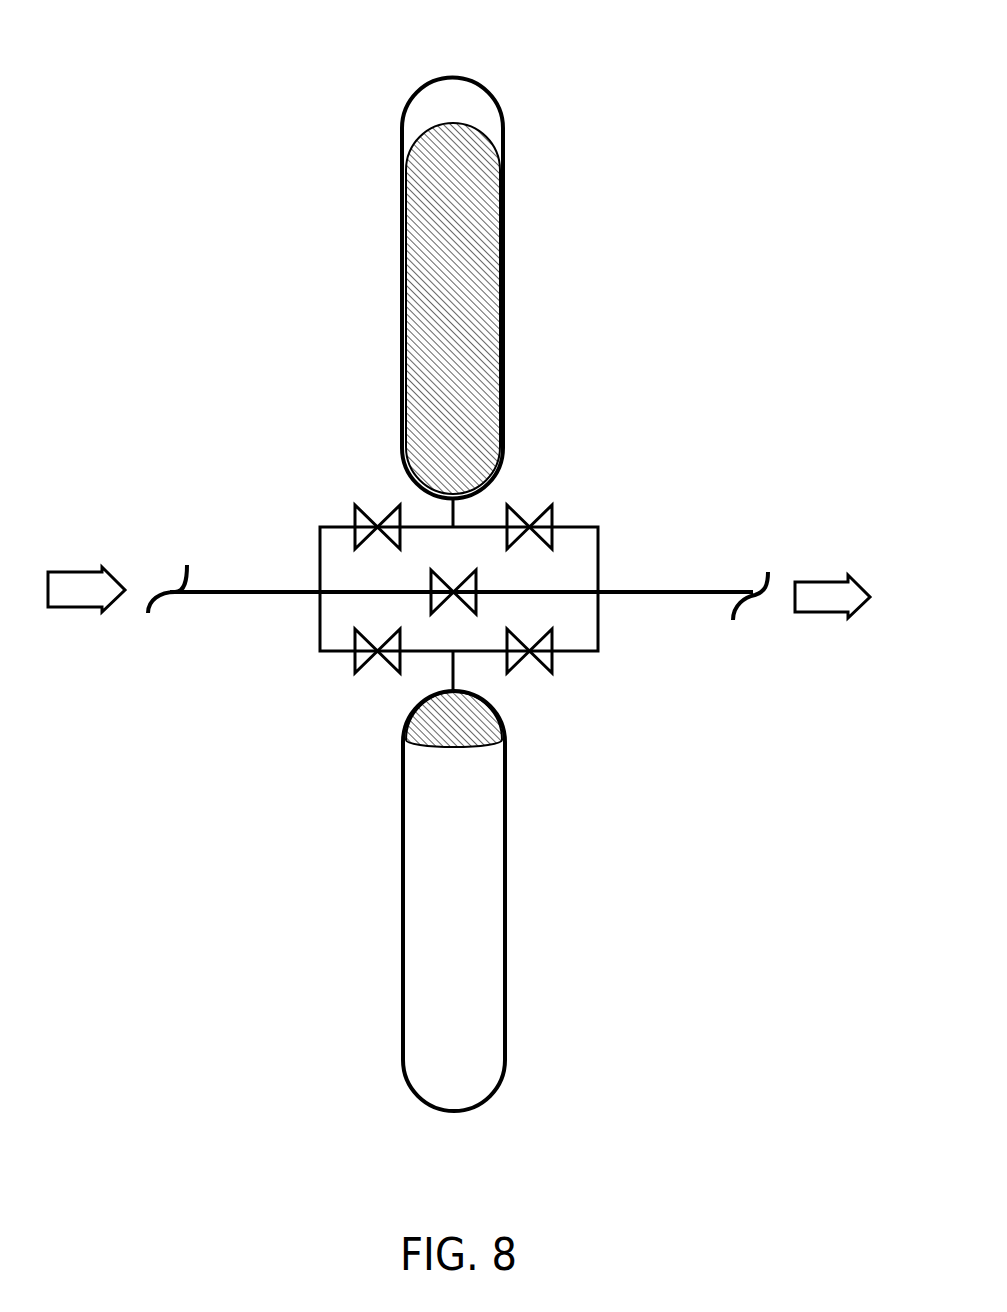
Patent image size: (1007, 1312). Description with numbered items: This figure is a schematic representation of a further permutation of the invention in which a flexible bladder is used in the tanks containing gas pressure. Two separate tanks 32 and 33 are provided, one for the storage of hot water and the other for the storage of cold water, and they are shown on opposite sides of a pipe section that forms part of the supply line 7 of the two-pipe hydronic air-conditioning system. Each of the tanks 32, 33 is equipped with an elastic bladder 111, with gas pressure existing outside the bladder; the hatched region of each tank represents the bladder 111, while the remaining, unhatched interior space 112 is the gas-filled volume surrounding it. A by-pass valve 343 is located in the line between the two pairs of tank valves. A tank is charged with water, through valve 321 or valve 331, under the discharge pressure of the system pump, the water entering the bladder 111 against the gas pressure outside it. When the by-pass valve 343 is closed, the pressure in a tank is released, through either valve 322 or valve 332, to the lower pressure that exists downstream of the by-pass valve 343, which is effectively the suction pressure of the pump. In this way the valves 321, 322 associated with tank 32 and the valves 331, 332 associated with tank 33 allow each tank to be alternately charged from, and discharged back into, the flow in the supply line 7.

The supply line 7 is at (265, 588).
The tank 32 is at (402, 895).
The tank 33 is at (503, 270).
The elastic bladder 111 is at (447, 118).
The empty space 112 is at (463, 102).
The valve 321 is at (383, 663).
The valve 322 is at (525, 662).
The valve 331 is at (377, 515).
The valve 332 is at (527, 517).
The by-pass valve 343 is at (483, 580).